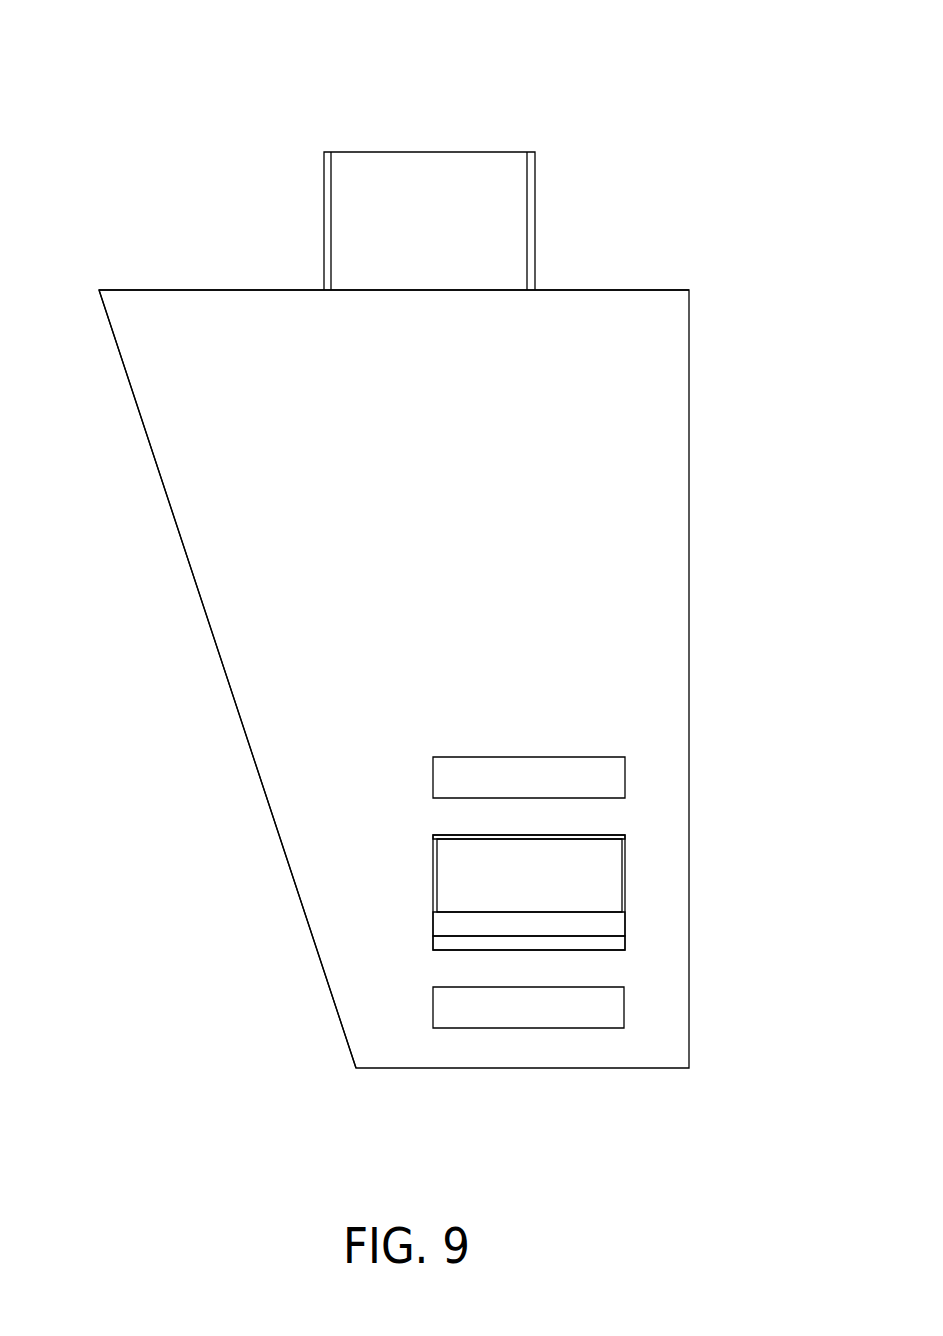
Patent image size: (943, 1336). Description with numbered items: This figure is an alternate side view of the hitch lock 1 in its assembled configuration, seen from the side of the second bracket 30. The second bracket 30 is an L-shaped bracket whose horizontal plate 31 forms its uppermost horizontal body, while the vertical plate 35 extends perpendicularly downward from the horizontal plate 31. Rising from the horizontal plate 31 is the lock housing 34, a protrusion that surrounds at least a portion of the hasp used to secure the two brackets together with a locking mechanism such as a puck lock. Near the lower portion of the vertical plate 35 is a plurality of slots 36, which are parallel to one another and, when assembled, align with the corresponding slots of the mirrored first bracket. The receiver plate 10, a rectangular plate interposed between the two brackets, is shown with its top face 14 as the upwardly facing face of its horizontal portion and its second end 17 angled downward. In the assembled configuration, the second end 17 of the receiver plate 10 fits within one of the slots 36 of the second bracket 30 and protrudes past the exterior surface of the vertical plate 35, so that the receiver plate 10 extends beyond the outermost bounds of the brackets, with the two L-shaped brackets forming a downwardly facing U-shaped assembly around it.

The hitch lock 1 is at (692, 45).
The second bracket 30 is at (673, 263).
The horizontal plate 31 is at (158, 289).
The lock housing 34 is at (346, 158).
The vertical plate 35 is at (232, 532).
The receiver plate 10 is at (644, 886).
The top face 14 is at (458, 872).
The second end 17 is at (442, 922).
The slots 36 is at (448, 777).